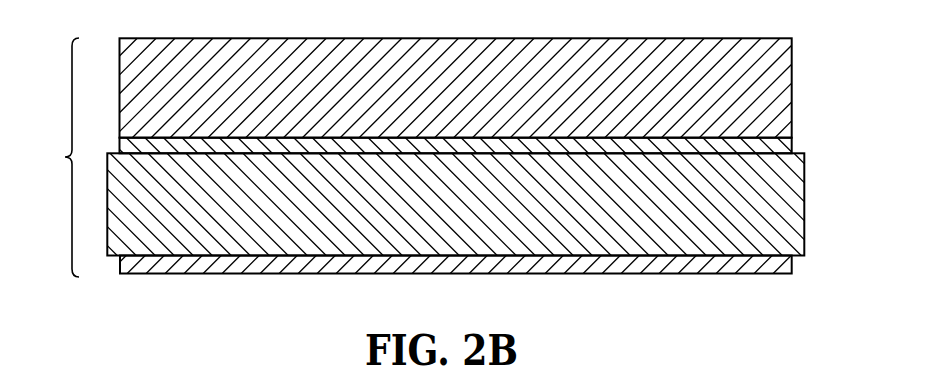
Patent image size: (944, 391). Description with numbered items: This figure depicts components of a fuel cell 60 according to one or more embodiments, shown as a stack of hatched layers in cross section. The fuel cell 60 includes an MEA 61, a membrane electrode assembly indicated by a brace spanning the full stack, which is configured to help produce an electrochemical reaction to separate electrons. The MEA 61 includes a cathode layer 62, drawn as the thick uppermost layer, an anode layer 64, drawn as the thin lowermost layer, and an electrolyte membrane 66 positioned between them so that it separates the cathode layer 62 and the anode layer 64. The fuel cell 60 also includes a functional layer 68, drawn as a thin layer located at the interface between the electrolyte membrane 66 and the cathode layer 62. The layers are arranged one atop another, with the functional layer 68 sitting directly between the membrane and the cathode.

The fuel cell 60 is at (187, 302).
The MEA 61 is at (56, 157).
The cathode layer 62 is at (792, 75).
The anode layer 64 is at (792, 265).
The electrolyte membrane 66 is at (804, 203).
The functional layer 68 is at (792, 145).